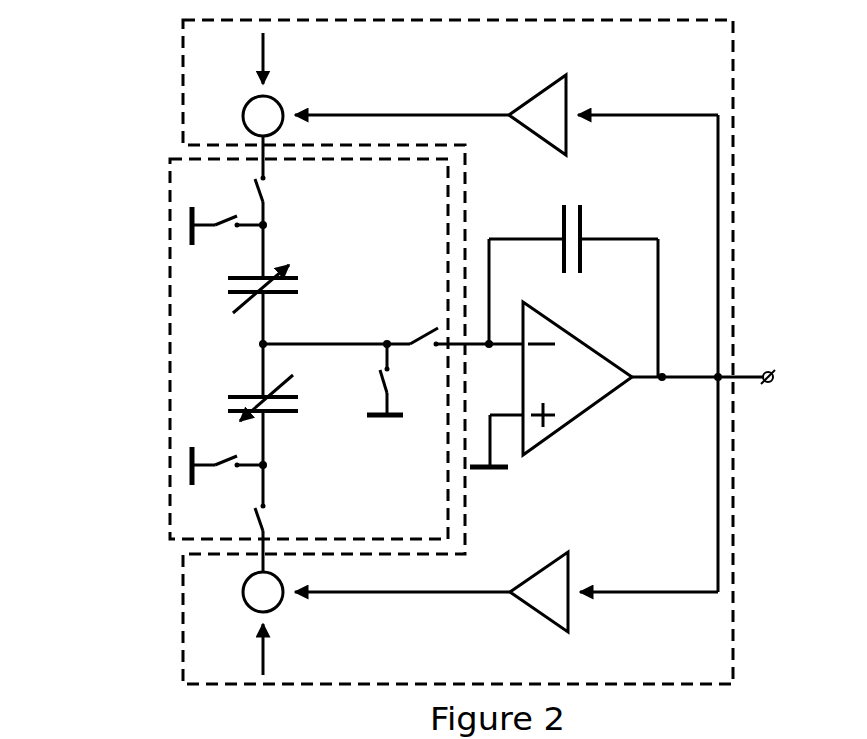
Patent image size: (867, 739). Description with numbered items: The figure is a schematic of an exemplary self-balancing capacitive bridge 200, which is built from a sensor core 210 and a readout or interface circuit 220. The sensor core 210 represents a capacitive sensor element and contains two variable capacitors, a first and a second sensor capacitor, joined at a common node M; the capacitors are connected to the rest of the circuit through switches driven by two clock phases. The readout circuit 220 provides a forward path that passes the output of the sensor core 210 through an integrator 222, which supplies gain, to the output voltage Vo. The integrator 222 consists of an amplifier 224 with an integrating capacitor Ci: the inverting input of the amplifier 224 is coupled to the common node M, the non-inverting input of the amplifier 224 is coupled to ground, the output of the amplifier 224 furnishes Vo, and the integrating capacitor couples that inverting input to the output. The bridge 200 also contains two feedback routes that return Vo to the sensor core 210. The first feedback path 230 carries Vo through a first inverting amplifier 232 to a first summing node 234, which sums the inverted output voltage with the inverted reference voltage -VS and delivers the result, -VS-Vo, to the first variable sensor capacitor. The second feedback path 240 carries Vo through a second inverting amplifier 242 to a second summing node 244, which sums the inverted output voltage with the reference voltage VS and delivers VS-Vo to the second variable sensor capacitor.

The self-balancing bridge 200 is at (112, 76).
The sensor core 210 is at (168, 315).
The readout circuit 220 is at (733, 75).
The integrator 222 is at (610, 419).
The amplifier 224 is at (545, 438).
The first feedback path 230 is at (715, 193).
The first inverting amplifier 232 is at (533, 97).
The first summing node 234 is at (278, 100).
The second feedback path 240 is at (717, 495).
The second inverting amplifier 242 is at (533, 608).
The second summing node 244 is at (275, 608).